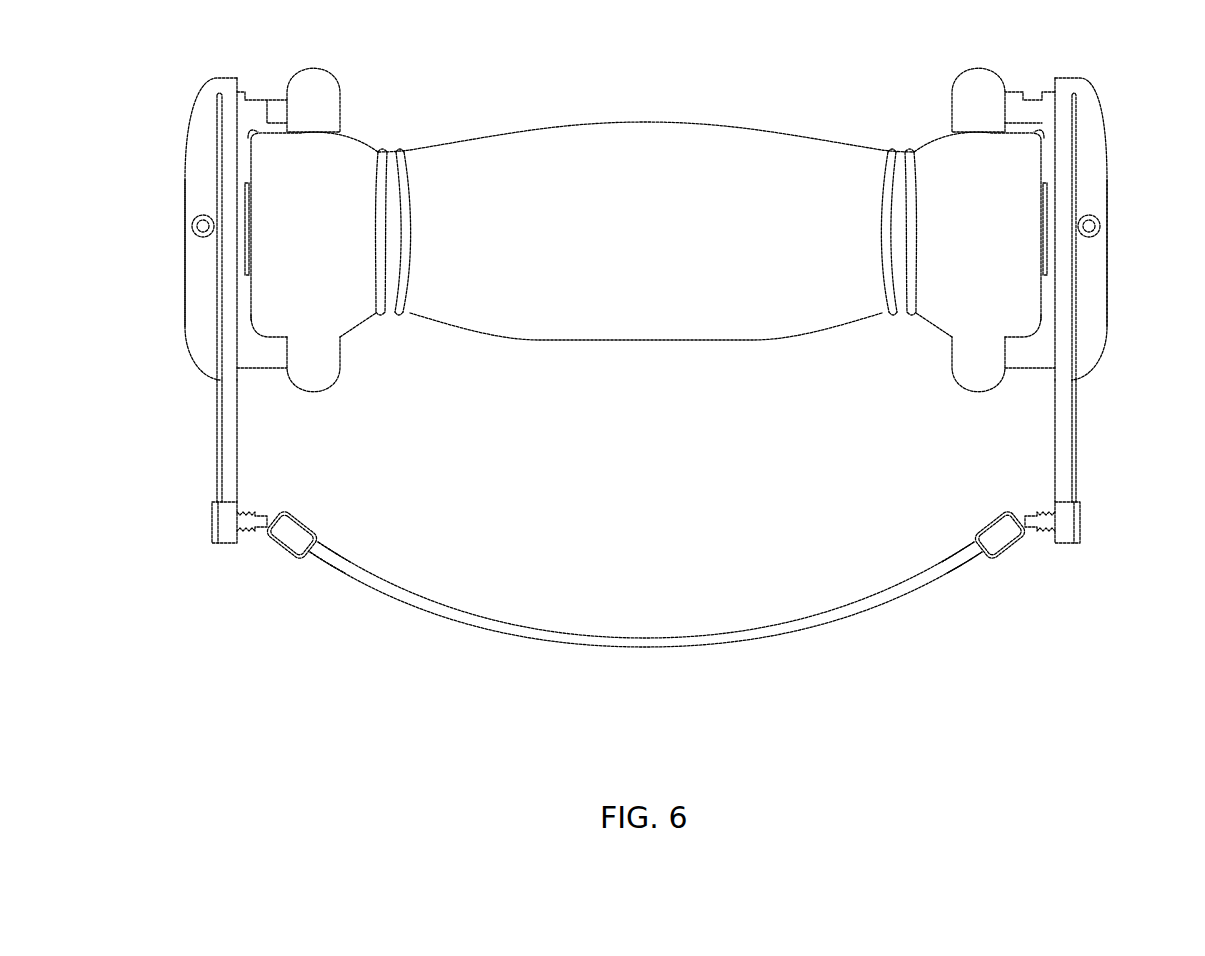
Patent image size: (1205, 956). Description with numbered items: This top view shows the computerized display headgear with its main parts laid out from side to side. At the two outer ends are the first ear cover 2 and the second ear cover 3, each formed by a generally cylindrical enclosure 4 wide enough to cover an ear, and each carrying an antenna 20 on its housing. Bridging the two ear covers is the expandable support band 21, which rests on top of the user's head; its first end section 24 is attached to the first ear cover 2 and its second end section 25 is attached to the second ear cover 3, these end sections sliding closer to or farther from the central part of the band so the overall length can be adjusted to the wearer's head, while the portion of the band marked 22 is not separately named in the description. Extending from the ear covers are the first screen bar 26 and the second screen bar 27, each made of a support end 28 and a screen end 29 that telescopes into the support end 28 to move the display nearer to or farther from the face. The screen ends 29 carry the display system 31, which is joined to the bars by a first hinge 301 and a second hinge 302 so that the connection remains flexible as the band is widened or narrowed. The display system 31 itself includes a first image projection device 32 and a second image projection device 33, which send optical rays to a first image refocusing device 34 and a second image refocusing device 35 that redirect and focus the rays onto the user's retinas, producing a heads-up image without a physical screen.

The first ear cover 2 is at (207, 160).
The second ear cover 3 is at (1094, 117).
The enclosure 4 is at (181, 274).
The antenna 20 is at (203, 228).
The expandable support band 21 is at (641, 110).
The cushion lower surface 22 is at (626, 314).
The first end section 24 is at (348, 312).
The second end section 25 is at (925, 314).
The first screen bar 26 is at (254, 463).
The second screen bar 27 is at (1028, 460).
The support end 28 is at (236, 371).
The screen end 29 is at (223, 526).
The display system 31 is at (650, 600).
The first image projection device 32 is at (267, 524).
The second image projection device 33 is at (1028, 523).
The first image refocusing device 34 is at (299, 551).
The second image refocusing device 35 is at (992, 552).
The first hinge 301 is at (260, 504).
The second hinge 302 is at (1029, 502).